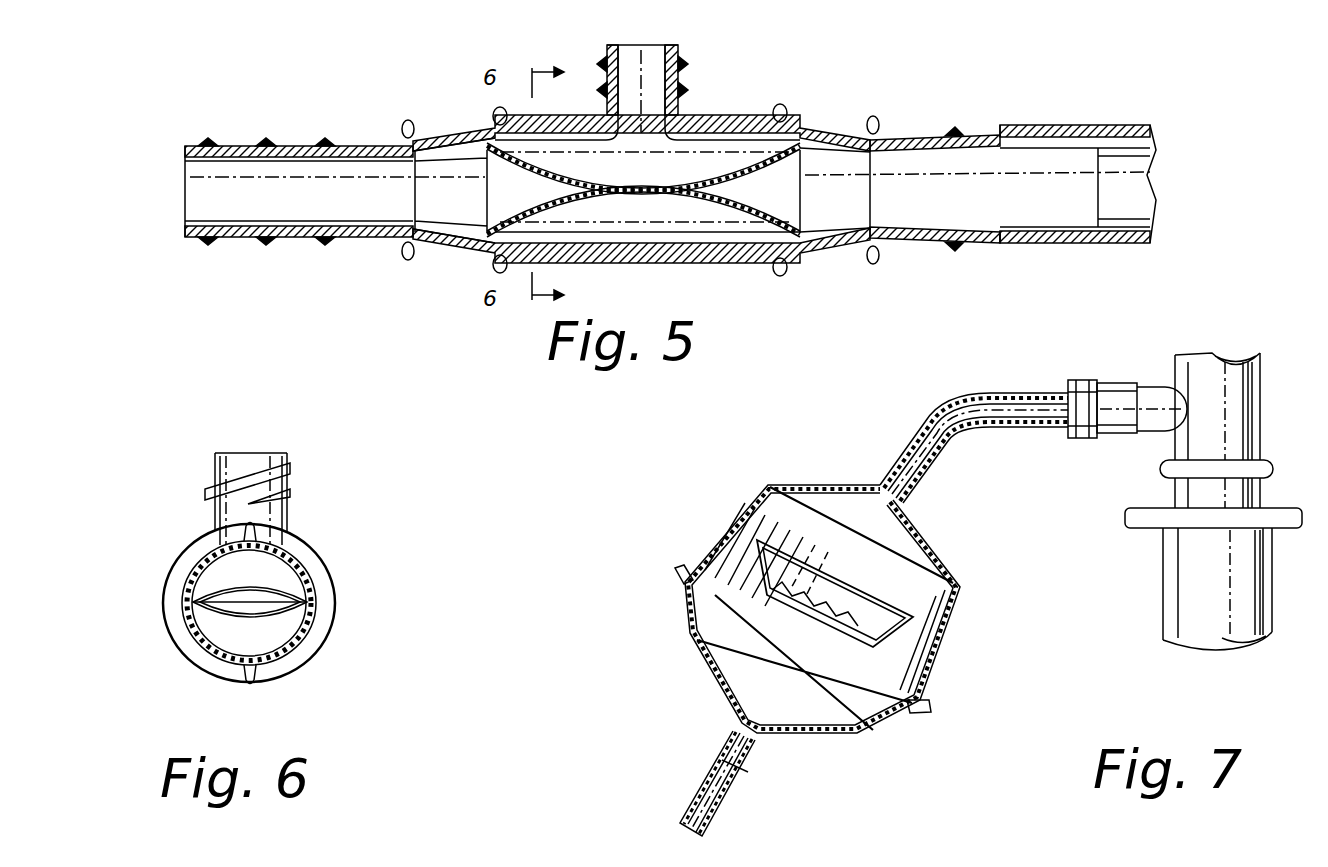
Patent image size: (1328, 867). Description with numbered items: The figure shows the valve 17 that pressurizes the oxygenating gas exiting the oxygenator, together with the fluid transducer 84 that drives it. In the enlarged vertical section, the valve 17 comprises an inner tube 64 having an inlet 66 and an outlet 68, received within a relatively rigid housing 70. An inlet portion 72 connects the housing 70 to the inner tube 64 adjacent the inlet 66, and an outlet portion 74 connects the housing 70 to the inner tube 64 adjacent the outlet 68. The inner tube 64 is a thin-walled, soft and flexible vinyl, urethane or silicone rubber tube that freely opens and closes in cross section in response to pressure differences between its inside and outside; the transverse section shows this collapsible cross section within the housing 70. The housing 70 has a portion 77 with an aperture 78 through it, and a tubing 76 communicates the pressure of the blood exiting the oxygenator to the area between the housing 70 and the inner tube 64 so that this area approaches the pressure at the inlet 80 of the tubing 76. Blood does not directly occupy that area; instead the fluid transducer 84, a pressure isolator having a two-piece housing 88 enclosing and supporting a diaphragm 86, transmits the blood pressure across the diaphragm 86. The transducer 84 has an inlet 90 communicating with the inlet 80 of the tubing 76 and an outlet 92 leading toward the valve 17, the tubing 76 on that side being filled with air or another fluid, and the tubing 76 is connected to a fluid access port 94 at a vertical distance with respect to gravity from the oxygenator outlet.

In FIG. 5, the valve 17 is at (733, 105).
In FIG. 6, the valve 17 is at (318, 529).
In FIG. 5, the inner tube 64 is at (747, 199).
In FIG. 6, the inner tube 64 is at (218, 605).
In FIG. 5, the inlet 66 is at (822, 248).
In FIG. 5, the outlet 68 is at (478, 137).
In FIG. 5, the housing 70 is at (560, 118).
In FIG. 6, the housing 70 is at (337, 602).
In FIG. 5, the inlet portion 72 is at (822, 125).
In FIG. 5, the outlet portion 74 is at (442, 260).
In FIG. 7, the tubing 76 is at (713, 828).
In FIG. 5, the portion 77 is at (680, 60).
In FIG. 6, the portion 77 is at (292, 458).
In FIG. 5, the aperture 78 is at (645, 56).
In FIG. 7, the inlet 80 is at (1065, 428).
In FIG. 7, the fluid transducer 84 is at (800, 483).
In FIG. 7, the diaphragm 86 is at (912, 657).
In FIG. 7, the two-piece housing 88 is at (682, 580).
In FIG. 7, the inlet 90 is at (905, 440).
In FIG. 7, the outlet 92 is at (730, 772).
In FIG. 7, the fluid access port 94 is at (1160, 392).